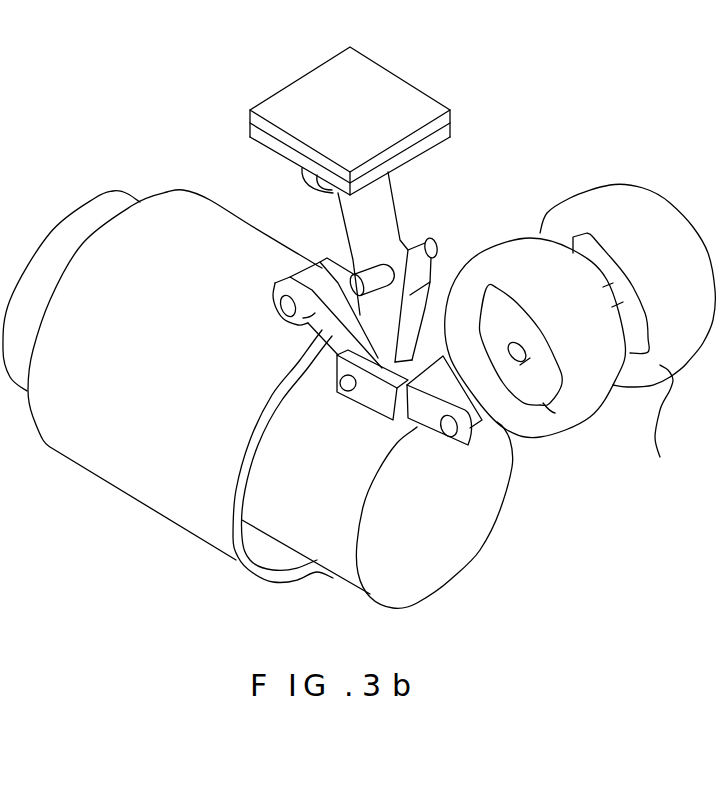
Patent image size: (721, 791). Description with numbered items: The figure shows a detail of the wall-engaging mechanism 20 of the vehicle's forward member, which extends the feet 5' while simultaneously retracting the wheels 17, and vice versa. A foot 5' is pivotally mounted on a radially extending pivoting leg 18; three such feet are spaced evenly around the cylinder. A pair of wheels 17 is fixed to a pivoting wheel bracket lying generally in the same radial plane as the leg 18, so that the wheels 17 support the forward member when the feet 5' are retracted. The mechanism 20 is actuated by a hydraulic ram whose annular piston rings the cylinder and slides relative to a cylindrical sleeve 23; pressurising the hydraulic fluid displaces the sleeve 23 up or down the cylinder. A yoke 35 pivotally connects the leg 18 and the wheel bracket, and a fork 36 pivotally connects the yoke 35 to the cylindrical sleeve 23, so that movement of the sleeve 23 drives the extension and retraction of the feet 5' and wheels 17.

The feet 5' is at (374, 121).
The wall-engaging mechanism 20 is at (512, 153).
The pivoting leg 18 is at (372, 218).
The fork 36 is at (292, 328).
The yoke 35 is at (410, 407).
The cylindrical sleeve 23 is at (235, 562).
The wheels 17 is at (593, 400).